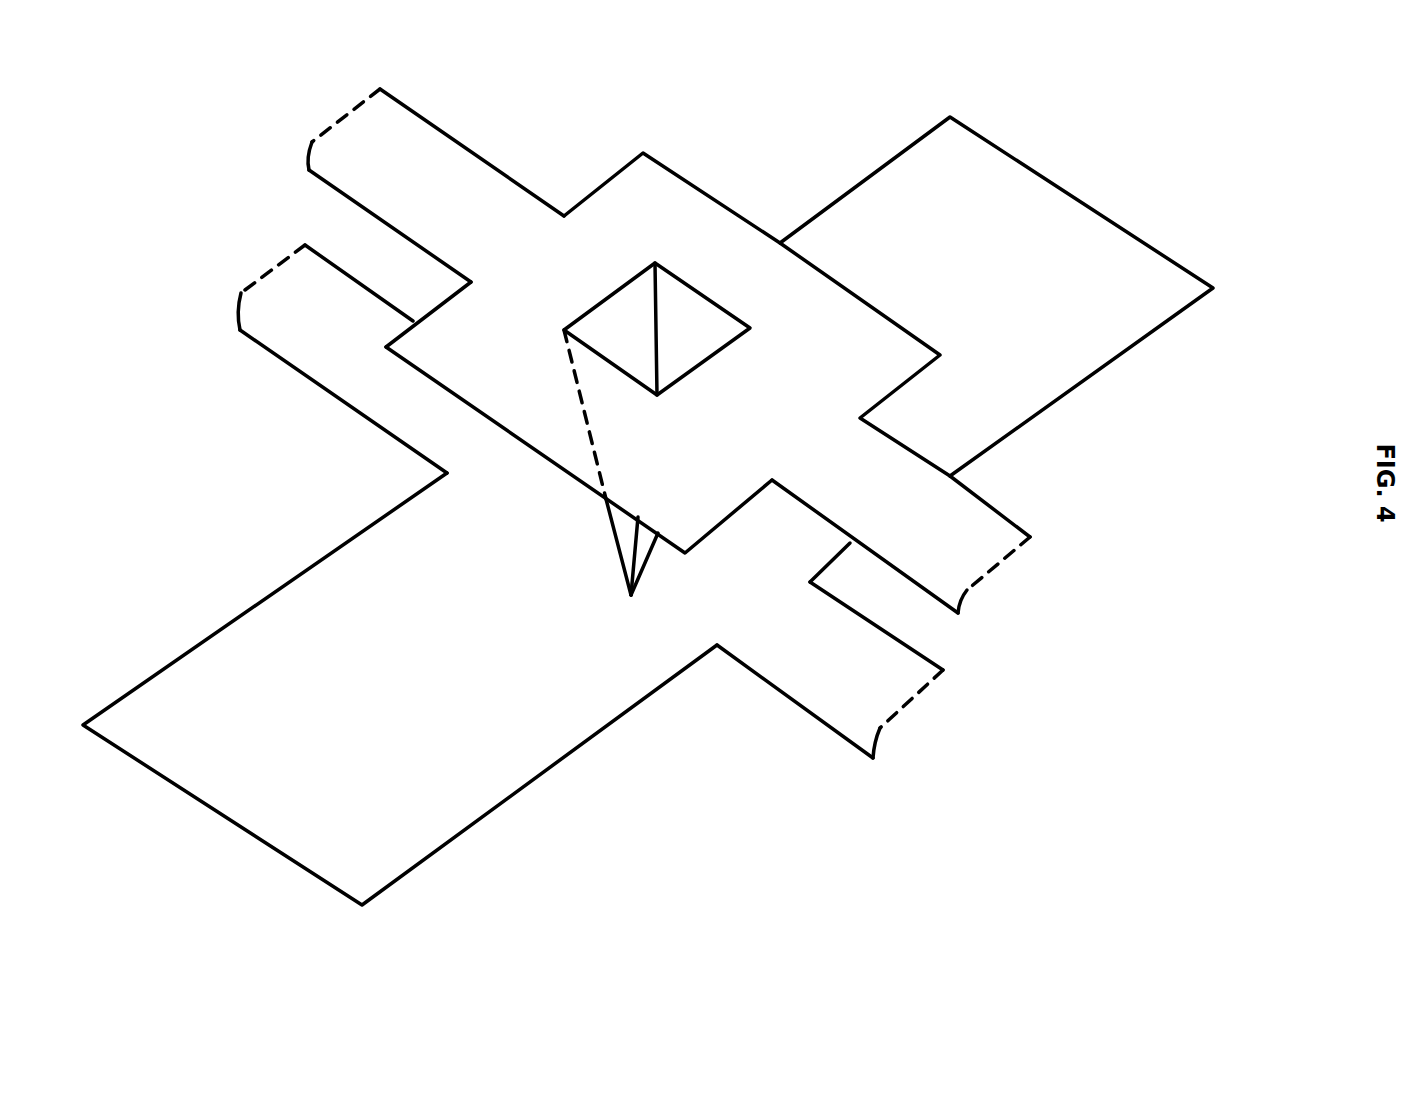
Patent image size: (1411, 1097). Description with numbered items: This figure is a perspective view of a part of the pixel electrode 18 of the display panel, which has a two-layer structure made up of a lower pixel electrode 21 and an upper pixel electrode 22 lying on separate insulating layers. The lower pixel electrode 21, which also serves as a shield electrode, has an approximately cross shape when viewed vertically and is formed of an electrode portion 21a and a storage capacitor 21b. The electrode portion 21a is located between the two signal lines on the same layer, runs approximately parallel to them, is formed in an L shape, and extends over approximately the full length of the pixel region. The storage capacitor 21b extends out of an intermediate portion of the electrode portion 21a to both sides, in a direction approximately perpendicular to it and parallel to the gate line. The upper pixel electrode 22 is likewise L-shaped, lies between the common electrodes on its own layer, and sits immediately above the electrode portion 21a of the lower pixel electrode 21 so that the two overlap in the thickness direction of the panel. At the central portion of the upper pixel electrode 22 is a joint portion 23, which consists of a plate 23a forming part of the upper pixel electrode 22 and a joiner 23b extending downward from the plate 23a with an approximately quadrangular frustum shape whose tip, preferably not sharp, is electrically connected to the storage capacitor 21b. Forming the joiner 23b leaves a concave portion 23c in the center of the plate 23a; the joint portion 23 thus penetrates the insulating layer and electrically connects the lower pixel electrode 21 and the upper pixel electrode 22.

The pixel electrode 18 is at (1145, 485).
The lower pixel electrode 21 is at (927, 658).
The electrode portion 21a is at (293, 348).
The storage capacitor 21b is at (543, 760).
The upper pixel electrode 22 is at (1013, 520).
The joint portion 23 is at (265, 437).
The plate 23a is at (432, 360).
The joiner 23b is at (618, 522).
The concave portion 23c is at (685, 310).